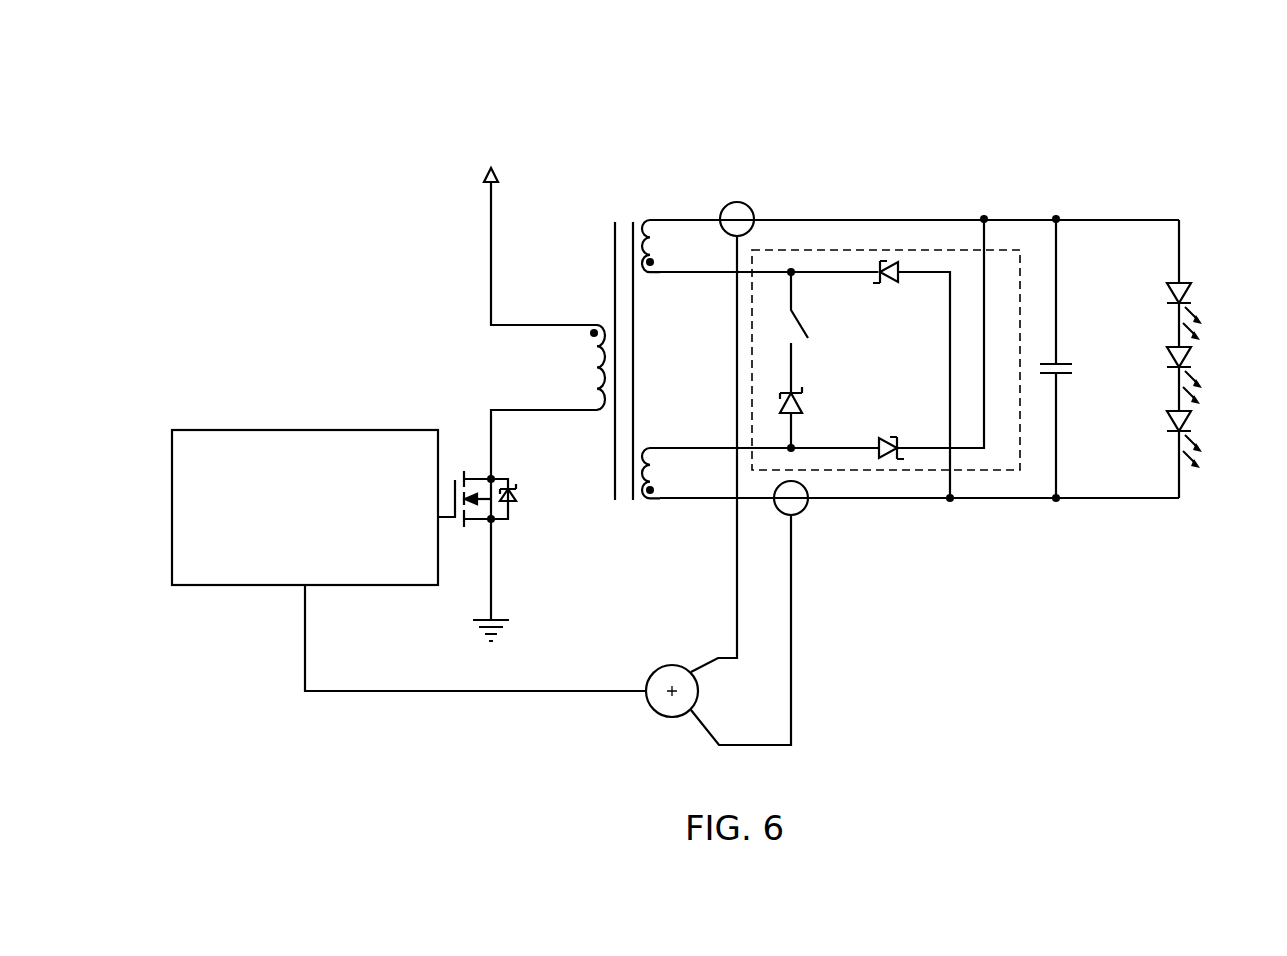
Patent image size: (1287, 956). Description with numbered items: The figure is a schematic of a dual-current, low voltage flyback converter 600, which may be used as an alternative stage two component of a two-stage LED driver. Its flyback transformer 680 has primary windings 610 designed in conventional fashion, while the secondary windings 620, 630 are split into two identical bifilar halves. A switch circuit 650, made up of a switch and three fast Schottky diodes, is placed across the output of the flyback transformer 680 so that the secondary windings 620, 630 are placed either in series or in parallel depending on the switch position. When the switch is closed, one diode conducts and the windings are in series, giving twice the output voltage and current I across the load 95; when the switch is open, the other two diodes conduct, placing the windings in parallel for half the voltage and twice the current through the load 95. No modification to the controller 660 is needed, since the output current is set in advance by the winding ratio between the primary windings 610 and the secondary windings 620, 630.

The low voltage flyback converter 600 is at (1124, 152).
The primary windings 610 is at (588, 355).
The secondary winding 620 is at (688, 218).
The secondary winding 630 is at (680, 500).
The switch circuit 650 is at (993, 470).
The controller 660 is at (285, 542).
The flyback transformer 680 is at (655, 196).
The load 95 is at (1193, 283).